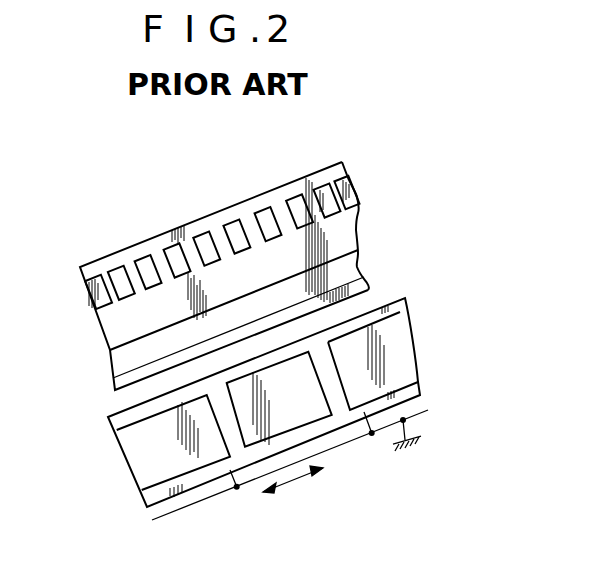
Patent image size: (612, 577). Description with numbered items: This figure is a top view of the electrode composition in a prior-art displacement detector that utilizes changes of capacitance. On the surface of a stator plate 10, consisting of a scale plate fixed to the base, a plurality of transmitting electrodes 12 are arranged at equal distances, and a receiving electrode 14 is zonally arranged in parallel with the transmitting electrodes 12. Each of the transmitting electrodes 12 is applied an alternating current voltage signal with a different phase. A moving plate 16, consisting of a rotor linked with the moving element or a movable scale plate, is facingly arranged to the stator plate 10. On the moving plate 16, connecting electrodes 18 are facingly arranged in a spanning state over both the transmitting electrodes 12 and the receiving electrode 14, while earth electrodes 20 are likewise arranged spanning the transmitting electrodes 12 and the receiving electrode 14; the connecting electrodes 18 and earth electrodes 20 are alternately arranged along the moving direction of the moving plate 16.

The stator plate 10 is at (172, 230).
The transmitting electrodes 12 is at (115, 270).
The receiving electrode 14 is at (357, 270).
The moving plate 16 is at (145, 505).
The connecting electrodes 18 is at (327, 418).
The earth electrodes 20 is at (407, 368).